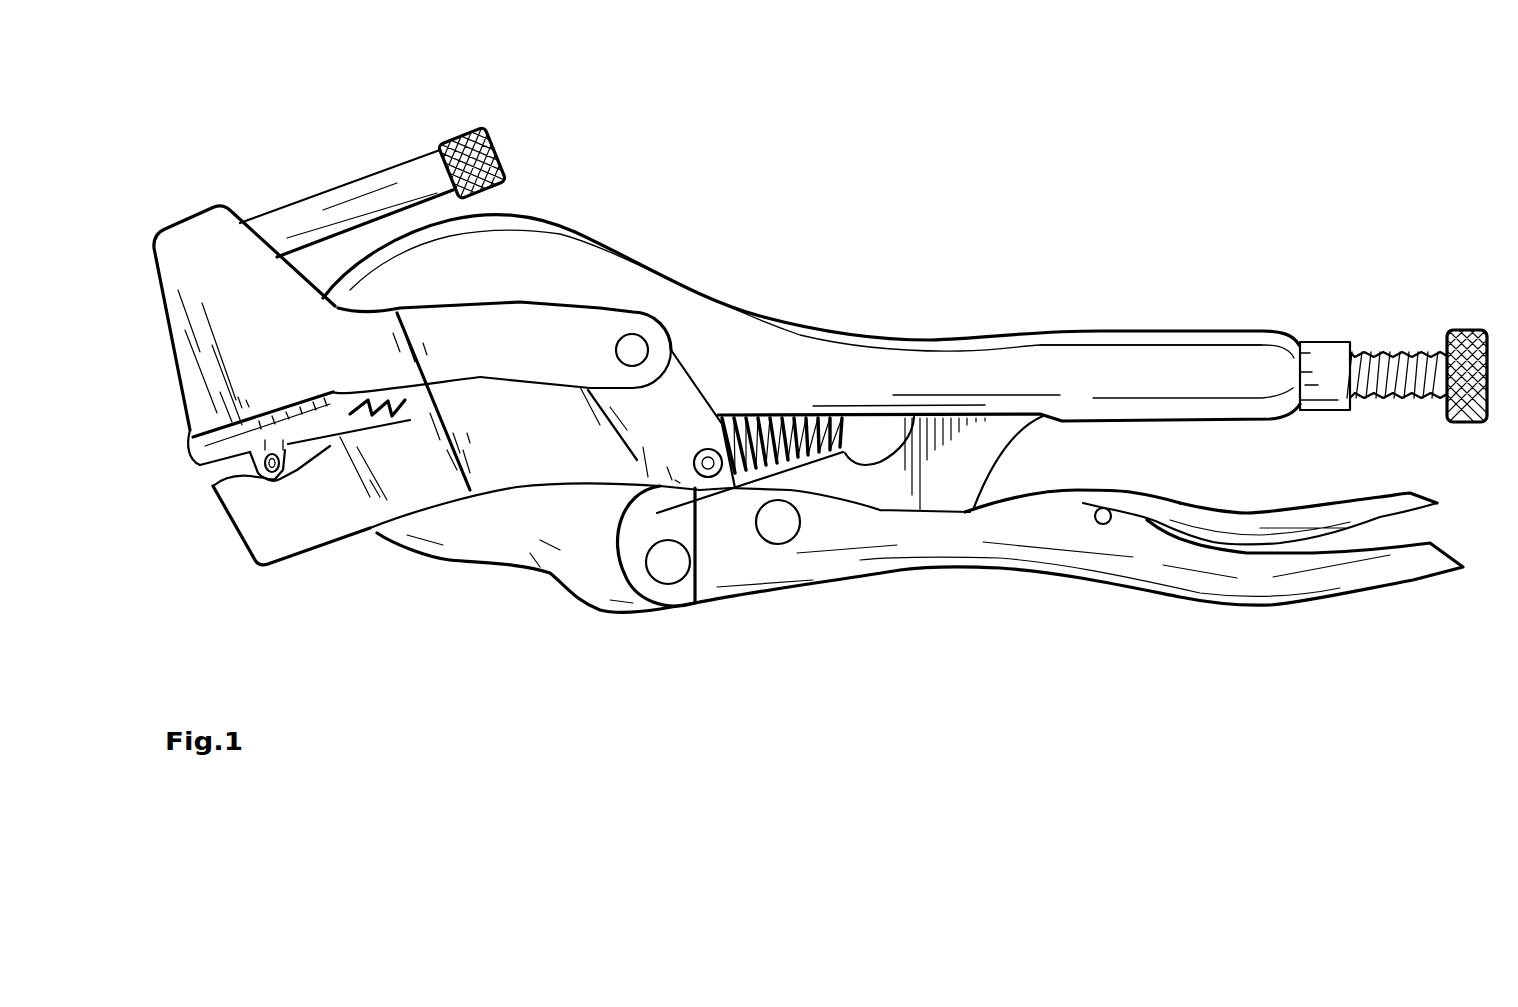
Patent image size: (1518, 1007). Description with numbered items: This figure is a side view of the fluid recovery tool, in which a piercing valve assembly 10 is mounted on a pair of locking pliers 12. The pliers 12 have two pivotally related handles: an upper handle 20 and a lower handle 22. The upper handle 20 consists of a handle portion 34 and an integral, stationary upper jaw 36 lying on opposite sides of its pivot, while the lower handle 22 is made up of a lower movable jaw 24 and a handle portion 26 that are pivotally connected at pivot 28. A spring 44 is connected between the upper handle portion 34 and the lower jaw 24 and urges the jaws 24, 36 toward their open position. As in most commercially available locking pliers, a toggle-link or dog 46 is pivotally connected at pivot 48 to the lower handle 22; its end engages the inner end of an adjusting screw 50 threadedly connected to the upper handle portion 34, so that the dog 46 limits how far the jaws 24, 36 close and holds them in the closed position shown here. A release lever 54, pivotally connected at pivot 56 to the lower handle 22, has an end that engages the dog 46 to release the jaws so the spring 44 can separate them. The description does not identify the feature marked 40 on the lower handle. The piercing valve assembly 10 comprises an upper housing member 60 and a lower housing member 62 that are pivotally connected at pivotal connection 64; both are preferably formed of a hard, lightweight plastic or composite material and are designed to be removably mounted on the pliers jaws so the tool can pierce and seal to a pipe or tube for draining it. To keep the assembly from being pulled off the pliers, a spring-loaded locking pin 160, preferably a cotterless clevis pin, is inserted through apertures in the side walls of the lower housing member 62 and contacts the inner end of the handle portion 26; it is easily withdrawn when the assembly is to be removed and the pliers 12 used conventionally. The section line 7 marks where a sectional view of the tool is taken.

The section line 7- 7 is at (620, 88).
The piercing valve assembly 10 is at (148, 214).
The pair of pliers 12 is at (949, 290).
The upper handle 20 is at (1087, 340).
The lower handle 22 is at (940, 567).
The lower movable jaw 24 is at (563, 580).
The handle portion 26 is at (750, 568).
The pivot 28 is at (670, 568).
The handle portion 34 is at (1172, 340).
The stationary upper jaw 36 is at (602, 237).
The toggle link 40 is at (957, 523).
The spring 44 is at (815, 440).
The toggle-link or dog 46 is at (993, 452).
The pivot 48 is at (790, 524).
The adjusting screw 50 is at (1375, 400).
The release lever 54 is at (1257, 516).
The pivot 56 is at (1103, 507).
The upper housing member 60 is at (168, 339).
The lower housing member 62 is at (213, 490).
The pivotal connection 64 is at (646, 349).
The spring-loaded locking pin 160 is at (780, 487).